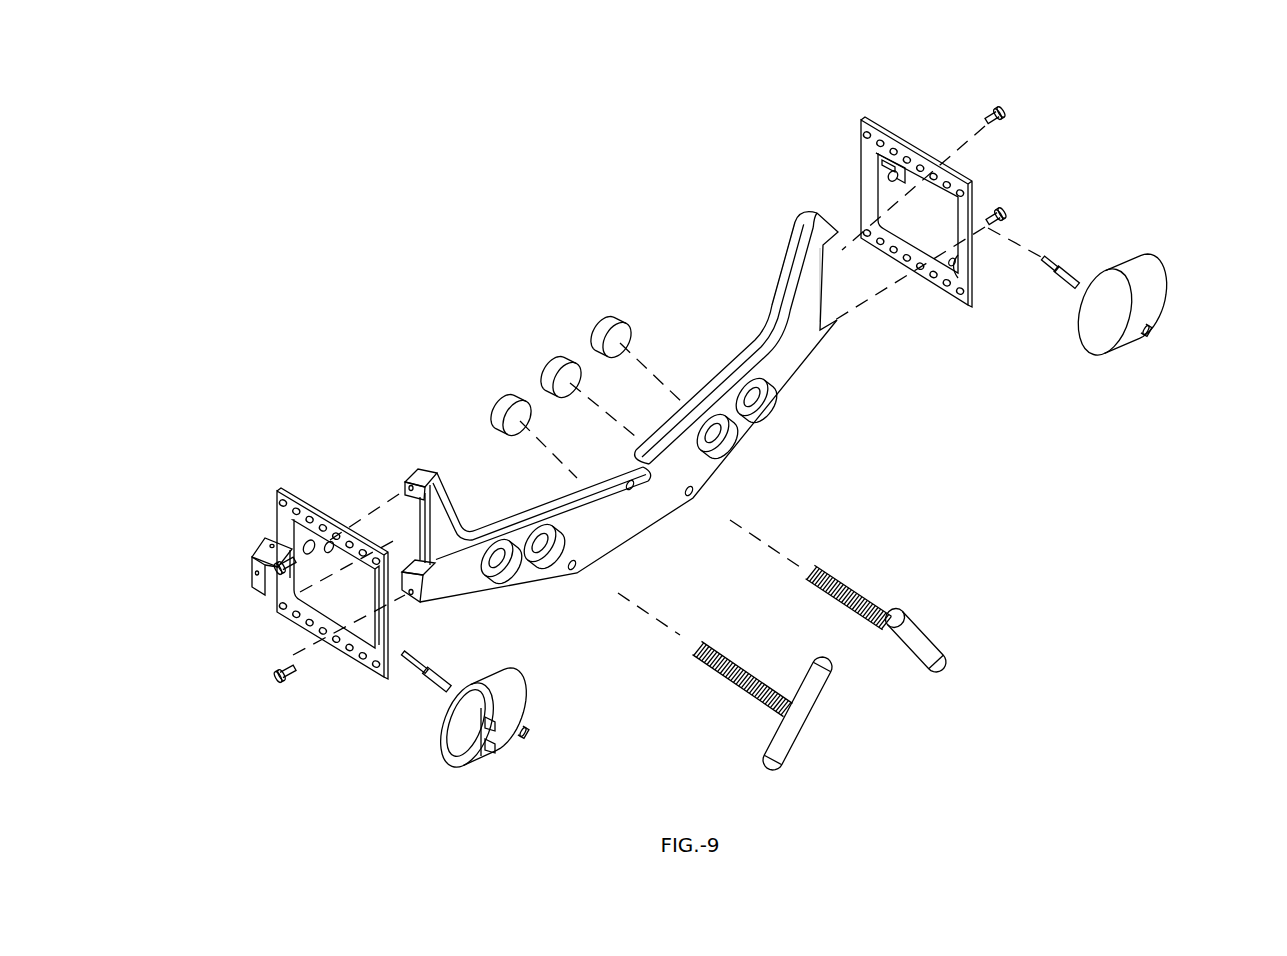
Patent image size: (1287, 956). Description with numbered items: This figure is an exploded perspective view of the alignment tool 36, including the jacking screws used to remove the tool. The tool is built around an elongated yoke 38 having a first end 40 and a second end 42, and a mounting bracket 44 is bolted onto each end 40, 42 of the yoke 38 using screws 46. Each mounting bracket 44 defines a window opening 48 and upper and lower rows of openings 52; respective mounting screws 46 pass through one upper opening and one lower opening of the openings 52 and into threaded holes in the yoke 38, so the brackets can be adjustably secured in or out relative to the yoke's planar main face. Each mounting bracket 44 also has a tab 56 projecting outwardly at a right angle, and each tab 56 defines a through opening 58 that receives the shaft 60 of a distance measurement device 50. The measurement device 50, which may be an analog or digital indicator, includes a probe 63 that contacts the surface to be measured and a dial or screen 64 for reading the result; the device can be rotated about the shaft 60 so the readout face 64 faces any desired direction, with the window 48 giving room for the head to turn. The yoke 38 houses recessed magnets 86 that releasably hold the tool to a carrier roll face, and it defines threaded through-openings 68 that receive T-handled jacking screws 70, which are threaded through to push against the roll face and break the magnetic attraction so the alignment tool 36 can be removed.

The alignment tool 36 is at (463, 283).
The yoke 38 is at (806, 376).
The first end 40 is at (426, 470).
The second end 42 is at (818, 216).
The mounting bracket 44 is at (859, 113).
The screws 46 is at (1007, 118).
The window opening 48 is at (955, 262).
The distance measurement device 50 is at (1162, 262).
The openings 52 is at (893, 151).
The tab 56 is at (886, 164).
The through opening 58 is at (886, 186).
The shaft 60 is at (1069, 290).
The probe 63 is at (1053, 259).
The dial or screen 64 is at (462, 727).
The threaded through-openings 68 is at (628, 483).
The jacking screws 70 is at (852, 590).
The magnets 86 is at (603, 328).